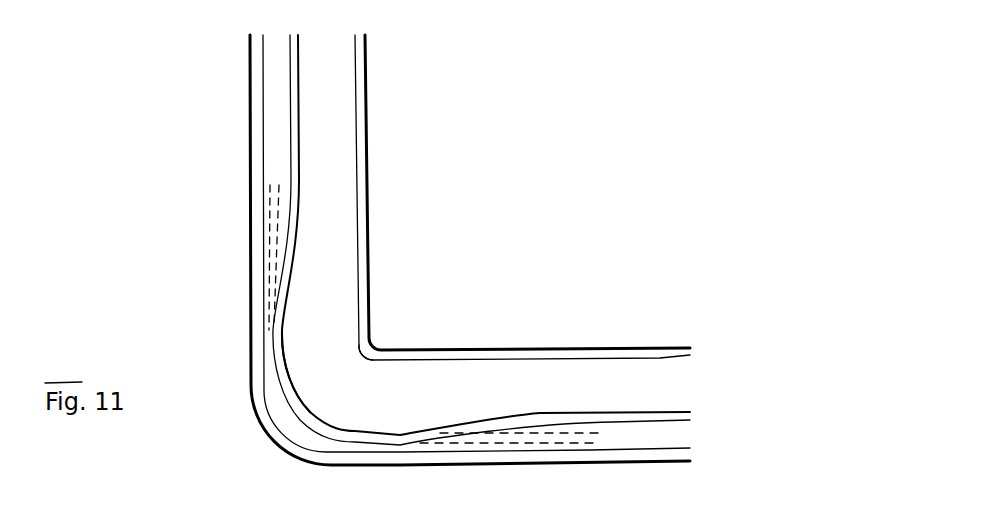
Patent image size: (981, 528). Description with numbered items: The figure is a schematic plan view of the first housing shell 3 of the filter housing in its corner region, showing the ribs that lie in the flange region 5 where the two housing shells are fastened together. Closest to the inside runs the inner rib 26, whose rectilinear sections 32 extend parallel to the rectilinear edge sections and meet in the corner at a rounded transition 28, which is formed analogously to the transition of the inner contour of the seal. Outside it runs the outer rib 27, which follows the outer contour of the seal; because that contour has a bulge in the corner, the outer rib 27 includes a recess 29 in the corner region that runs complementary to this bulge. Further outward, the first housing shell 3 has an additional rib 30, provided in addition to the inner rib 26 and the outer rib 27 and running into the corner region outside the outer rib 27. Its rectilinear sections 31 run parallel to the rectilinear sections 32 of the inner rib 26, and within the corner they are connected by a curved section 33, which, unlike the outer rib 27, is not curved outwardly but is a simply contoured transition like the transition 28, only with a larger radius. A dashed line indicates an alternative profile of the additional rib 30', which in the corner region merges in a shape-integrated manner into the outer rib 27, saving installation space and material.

The first housing shell 3 is at (558, 246).
The flange region 5 is at (246, 239).
The inner rib 26 is at (603, 344).
The outer rib 27 is at (288, 93).
The rounded transition 28 is at (363, 362).
The recess 29 is at (300, 392).
The additional rib 30 is at (432, 243).
The additional rib (alternative profile) 30' is at (230, 283).
The rectilinear sections 31 is at (257, 195).
The rectilinear sections 32 is at (370, 203).
The curved section 33 is at (282, 437).